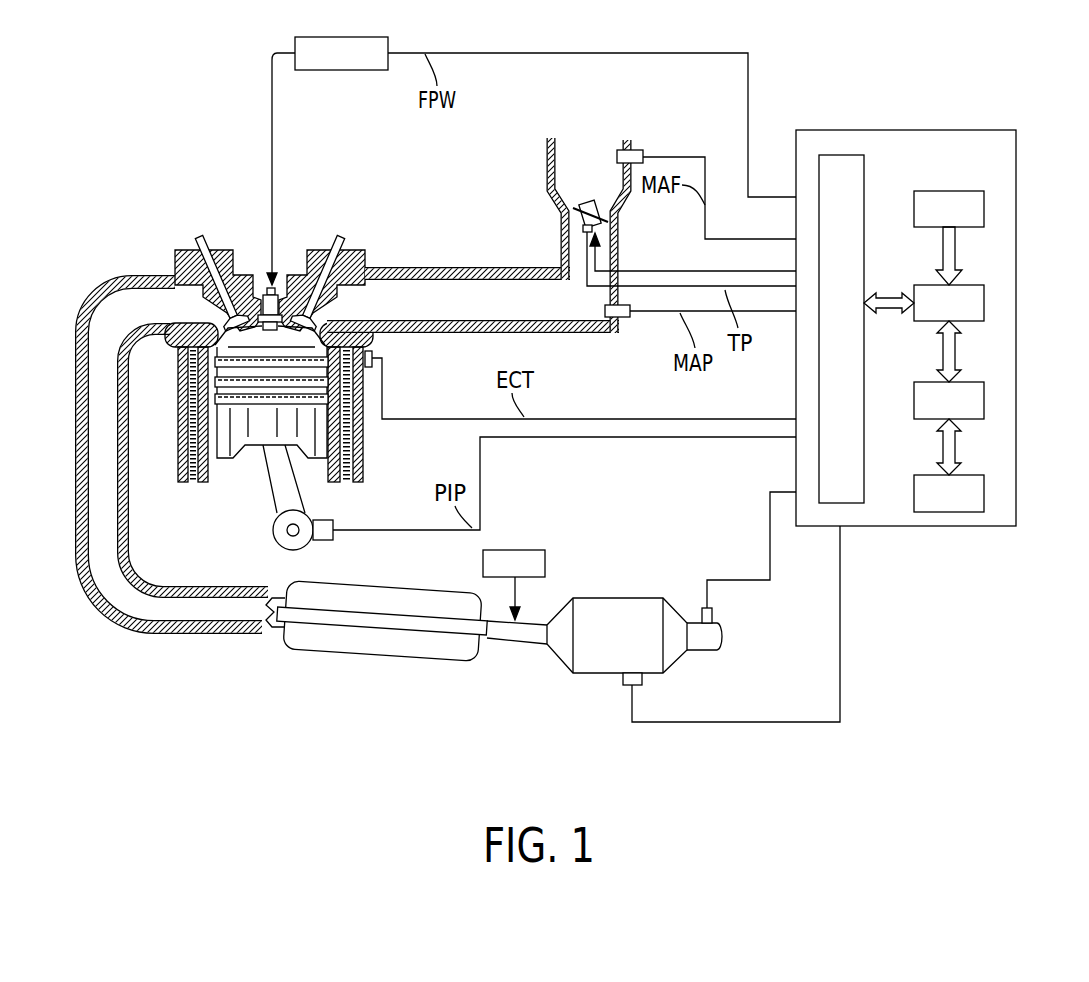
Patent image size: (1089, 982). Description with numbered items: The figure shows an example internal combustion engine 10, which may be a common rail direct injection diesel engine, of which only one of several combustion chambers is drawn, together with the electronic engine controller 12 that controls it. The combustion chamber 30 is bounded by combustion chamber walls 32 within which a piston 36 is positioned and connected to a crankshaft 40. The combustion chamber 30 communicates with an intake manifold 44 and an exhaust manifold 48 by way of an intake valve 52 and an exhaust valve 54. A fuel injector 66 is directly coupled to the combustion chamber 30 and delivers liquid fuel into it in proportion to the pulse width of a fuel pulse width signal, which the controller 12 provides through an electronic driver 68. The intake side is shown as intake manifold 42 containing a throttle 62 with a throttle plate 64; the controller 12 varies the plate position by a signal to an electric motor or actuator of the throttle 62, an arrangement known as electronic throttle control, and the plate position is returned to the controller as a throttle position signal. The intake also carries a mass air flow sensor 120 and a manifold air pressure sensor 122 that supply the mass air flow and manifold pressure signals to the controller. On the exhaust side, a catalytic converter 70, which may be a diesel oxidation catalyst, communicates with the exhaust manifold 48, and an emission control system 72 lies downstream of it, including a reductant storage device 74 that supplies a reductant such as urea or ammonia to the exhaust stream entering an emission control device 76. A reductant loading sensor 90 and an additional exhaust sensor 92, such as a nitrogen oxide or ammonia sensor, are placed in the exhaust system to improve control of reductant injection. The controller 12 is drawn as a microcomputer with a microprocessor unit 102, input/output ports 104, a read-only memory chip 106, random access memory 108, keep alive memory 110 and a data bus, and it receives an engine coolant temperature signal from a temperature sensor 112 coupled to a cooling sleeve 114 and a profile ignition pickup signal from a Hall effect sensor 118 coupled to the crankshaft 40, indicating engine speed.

The internal combustion engine 10 is at (101, 228).
The electronic engine controller 12 is at (914, 130).
The combustion chamber 30 is at (197, 362).
The combustion chamber walls 32 is at (200, 483).
The piston 36 is at (254, 450).
The crankshaft 40 is at (275, 541).
The intake manifold 42 is at (578, 181).
The intake manifold 44 is at (518, 309).
The exhaust manifold 48 is at (130, 316).
The intake valve 52 is at (316, 311).
The exhaust valve 54 is at (200, 232).
The throttle 62 is at (610, 221).
The throttle plate 64 is at (573, 208).
The fuel injector 66 is at (285, 282).
The electronic driver 68 is at (343, 70).
The catalytic converter 70 is at (386, 662).
The emission control system 72 is at (658, 545).
The reductant storage device 74 is at (513, 550).
The emission control device 76 is at (618, 598).
The reductant loading sensor 90 is at (630, 686).
The exhaust sensor 92 is at (713, 615).
The microprocessor unit 102 is at (977, 285).
The input/output ports 104 is at (864, 182).
The read-only memory chip 106 is at (962, 191).
The random access memory 108 is at (977, 382).
The keep alive memory 110 is at (977, 475).
The temperature sensor 112 is at (373, 351).
The cooling sleeve 114 is at (350, 434).
The Hall effect sensor 118 is at (336, 523).
The mass air flow sensor 120 is at (632, 150).
The manifold air pressure sensor 122 is at (620, 317).